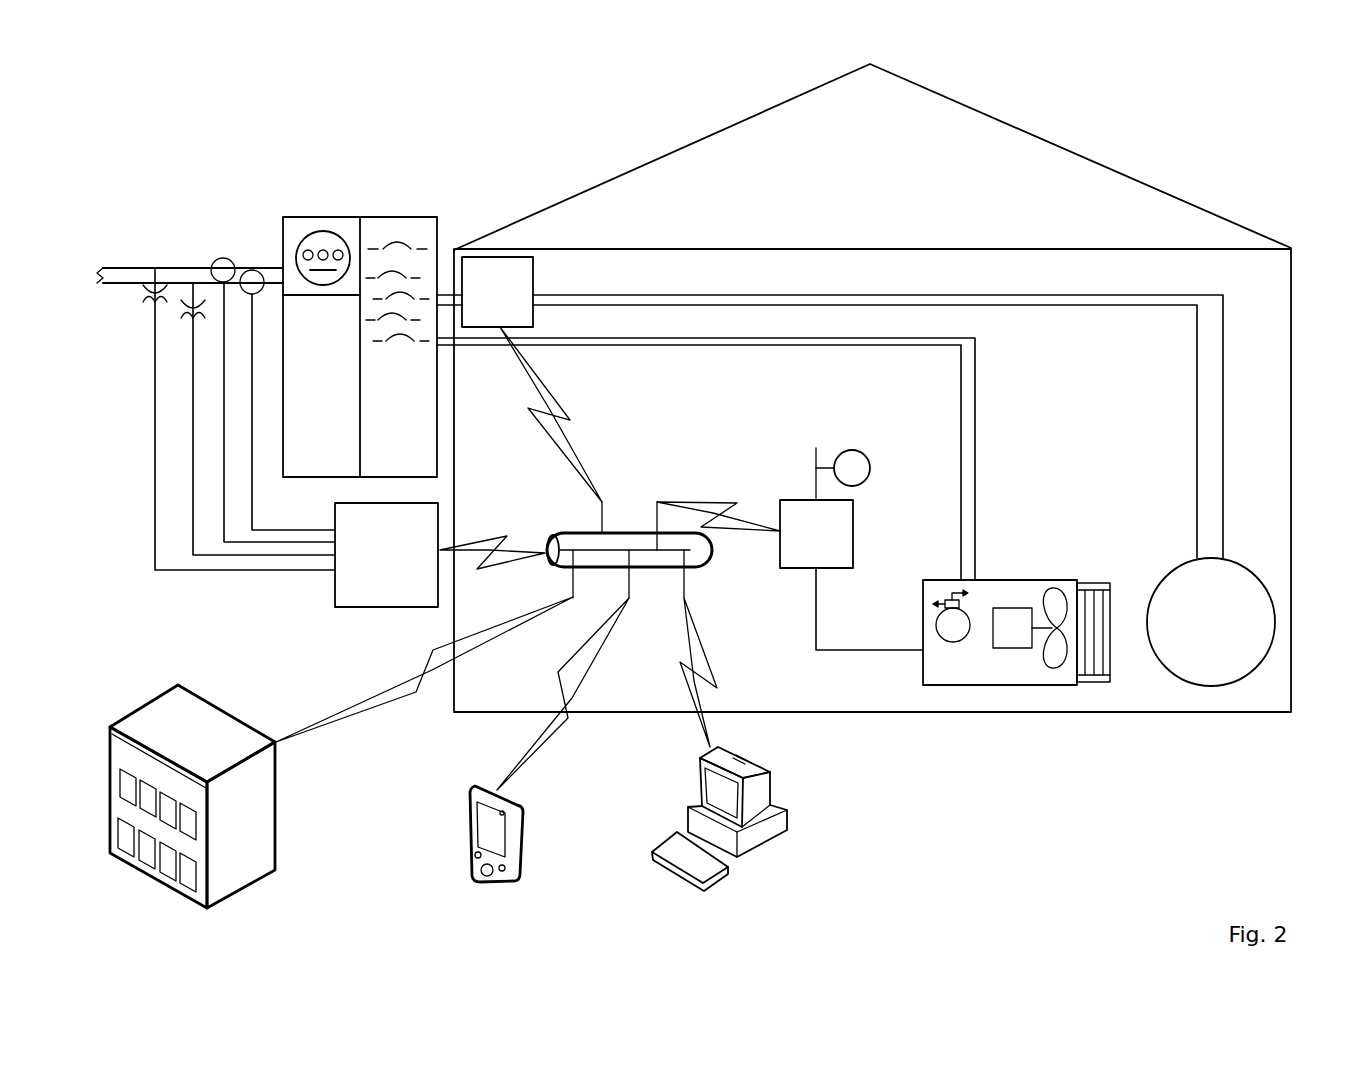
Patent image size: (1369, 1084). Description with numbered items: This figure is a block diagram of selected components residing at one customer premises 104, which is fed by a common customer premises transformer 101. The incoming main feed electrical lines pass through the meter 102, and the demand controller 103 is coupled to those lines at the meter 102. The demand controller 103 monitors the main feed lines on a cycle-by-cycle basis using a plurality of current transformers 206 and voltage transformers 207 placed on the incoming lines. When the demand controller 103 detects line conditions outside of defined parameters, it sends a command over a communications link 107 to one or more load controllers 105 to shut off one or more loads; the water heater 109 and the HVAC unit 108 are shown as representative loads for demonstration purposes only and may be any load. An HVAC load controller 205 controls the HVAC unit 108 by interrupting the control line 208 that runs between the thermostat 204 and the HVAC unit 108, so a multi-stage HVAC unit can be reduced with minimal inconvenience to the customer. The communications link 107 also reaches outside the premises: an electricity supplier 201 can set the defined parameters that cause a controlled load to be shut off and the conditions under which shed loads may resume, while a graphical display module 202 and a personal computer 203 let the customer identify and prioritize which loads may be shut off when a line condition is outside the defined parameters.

The customer premises transformer 101 is at (166, 265).
The meter 102 is at (313, 217).
The demand controller 103 is at (335, 602).
The customer premises 104 is at (1193, 244).
The load controller 105 is at (507, 257).
The communications link 107 is at (573, 411).
The HVAC unit 108 is at (1015, 580).
The water heater 109 is at (1173, 568).
The electricity supplier 201 is at (276, 792).
The graphical display module 202 is at (524, 836).
The personal computer 203 is at (784, 836).
The thermostat 204 is at (864, 452).
The HVAC load controller 205 is at (855, 510).
The current transformers 206 is at (222, 258).
The voltage transformers 207 is at (143, 301).
The control line 208 is at (817, 613).